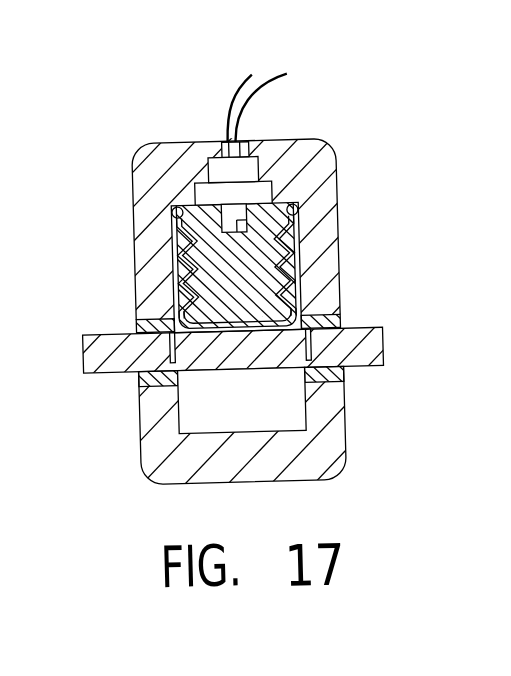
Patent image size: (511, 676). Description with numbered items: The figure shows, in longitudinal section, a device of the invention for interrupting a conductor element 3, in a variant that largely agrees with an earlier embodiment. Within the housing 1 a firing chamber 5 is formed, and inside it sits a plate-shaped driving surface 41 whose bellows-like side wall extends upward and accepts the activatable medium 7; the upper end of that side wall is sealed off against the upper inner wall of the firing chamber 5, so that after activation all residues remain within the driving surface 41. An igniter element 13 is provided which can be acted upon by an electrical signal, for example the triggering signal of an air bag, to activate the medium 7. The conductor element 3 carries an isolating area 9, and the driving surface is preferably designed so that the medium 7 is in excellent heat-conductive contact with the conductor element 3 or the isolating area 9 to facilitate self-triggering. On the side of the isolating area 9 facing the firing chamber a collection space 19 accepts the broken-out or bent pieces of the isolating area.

The housing body 1 is at (342, 164).
The conductor element 3 is at (371, 355).
The firing chamber 5 is at (303, 227).
The activatable medium 7 is at (279, 288).
The isolating area 9 is at (201, 362).
The igniter element 13 is at (257, 158).
The collection space 19 is at (253, 415).
The plate-shaped driving surface 41 is at (273, 321).